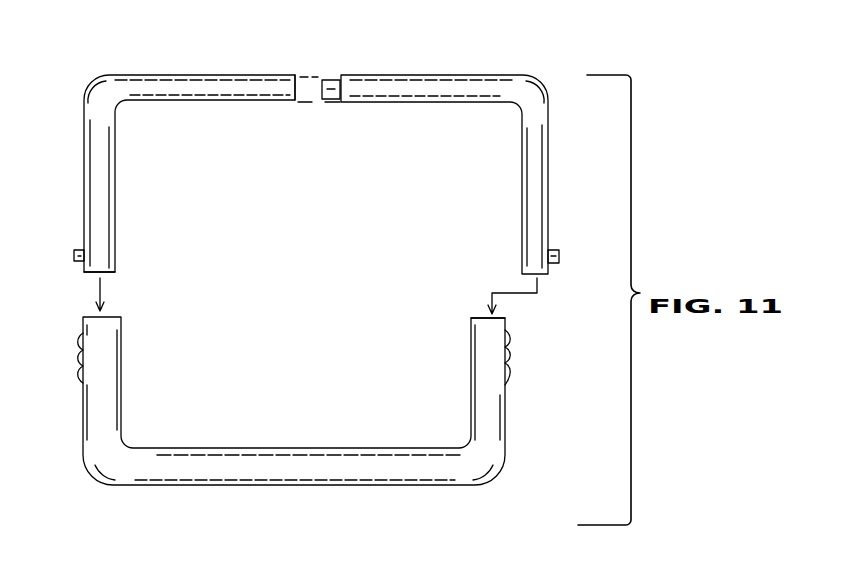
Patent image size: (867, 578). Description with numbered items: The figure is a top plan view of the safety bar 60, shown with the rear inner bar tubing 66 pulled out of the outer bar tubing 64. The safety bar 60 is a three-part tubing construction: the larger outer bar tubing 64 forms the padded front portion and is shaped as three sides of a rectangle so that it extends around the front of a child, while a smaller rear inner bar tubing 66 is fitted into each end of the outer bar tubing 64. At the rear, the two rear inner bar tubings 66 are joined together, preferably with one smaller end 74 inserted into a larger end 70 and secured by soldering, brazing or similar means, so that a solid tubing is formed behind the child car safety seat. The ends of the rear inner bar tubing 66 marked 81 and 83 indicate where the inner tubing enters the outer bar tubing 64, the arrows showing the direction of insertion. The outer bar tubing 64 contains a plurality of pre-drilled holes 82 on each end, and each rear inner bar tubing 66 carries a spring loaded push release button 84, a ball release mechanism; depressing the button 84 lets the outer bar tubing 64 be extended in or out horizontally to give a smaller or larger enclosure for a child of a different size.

The safety bar 60 is at (106, 500).
The outer bar tubing 64 is at (340, 455).
The rear inner bar tubing 66 is at (84, 152).
The larger end 70 is at (298, 101).
The smaller end 74 is at (327, 80).
The lower end of left upper member 81 is at (112, 272).
The pre-drilled holes 82 is at (80, 355).
The upper end of right lower leg 83 is at (480, 318).
The spring loaded push release button 84 is at (74, 255).